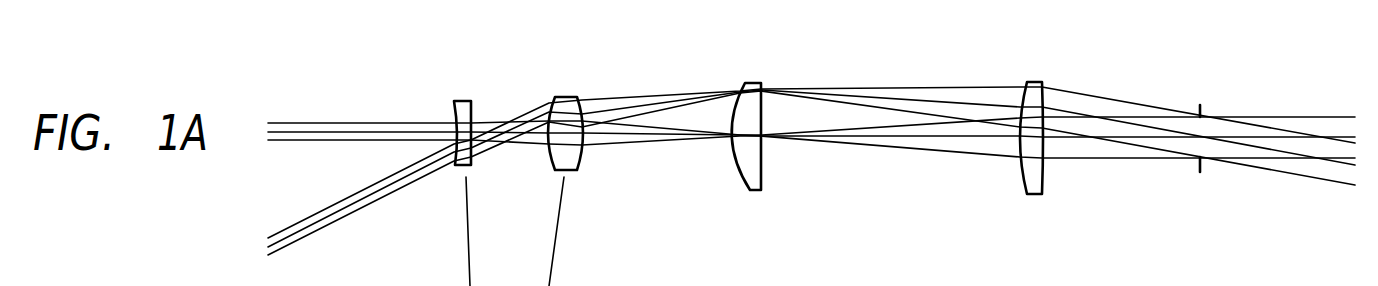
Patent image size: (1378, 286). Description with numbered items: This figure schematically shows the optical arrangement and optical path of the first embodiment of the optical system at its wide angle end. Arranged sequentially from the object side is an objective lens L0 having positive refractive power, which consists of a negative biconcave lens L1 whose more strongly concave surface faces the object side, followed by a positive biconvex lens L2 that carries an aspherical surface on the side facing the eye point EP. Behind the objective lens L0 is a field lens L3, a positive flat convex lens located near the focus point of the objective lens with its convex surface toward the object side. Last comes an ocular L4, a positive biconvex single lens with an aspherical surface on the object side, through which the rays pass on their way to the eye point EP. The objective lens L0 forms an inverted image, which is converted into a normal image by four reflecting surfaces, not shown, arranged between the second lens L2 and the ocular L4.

The objective lens L0 is at (632, 33).
The negative biconcave lens L1 is at (469, 99).
The positive biconvex lens L2 is at (585, 96).
The field lens L3 is at (760, 82).
The ocular L4 is at (1037, 80).
The eye point EP is at (1203, 122).